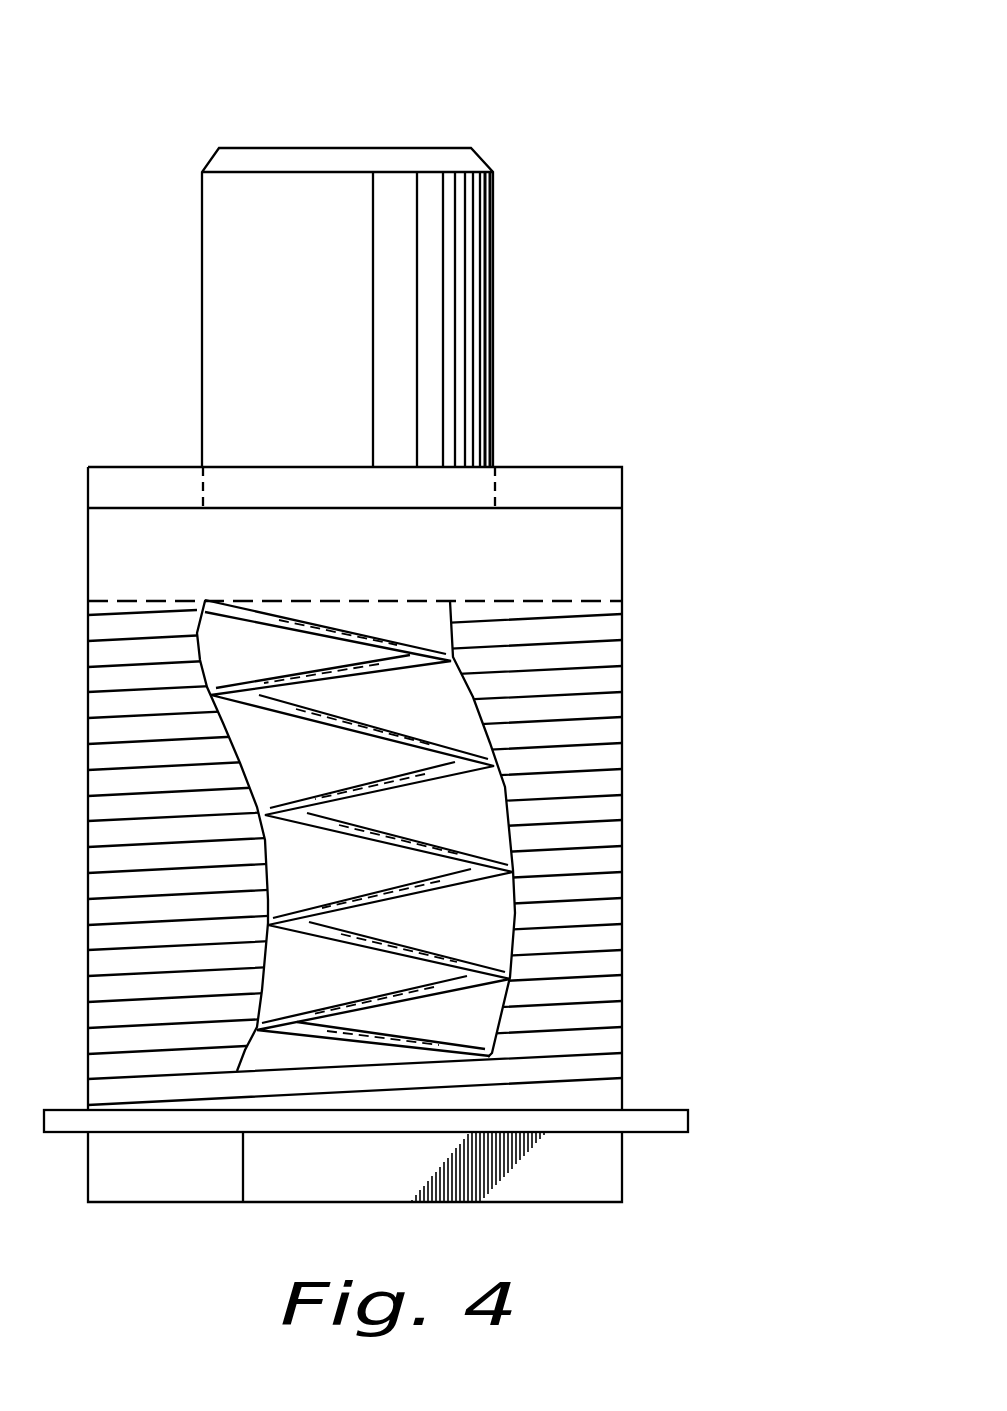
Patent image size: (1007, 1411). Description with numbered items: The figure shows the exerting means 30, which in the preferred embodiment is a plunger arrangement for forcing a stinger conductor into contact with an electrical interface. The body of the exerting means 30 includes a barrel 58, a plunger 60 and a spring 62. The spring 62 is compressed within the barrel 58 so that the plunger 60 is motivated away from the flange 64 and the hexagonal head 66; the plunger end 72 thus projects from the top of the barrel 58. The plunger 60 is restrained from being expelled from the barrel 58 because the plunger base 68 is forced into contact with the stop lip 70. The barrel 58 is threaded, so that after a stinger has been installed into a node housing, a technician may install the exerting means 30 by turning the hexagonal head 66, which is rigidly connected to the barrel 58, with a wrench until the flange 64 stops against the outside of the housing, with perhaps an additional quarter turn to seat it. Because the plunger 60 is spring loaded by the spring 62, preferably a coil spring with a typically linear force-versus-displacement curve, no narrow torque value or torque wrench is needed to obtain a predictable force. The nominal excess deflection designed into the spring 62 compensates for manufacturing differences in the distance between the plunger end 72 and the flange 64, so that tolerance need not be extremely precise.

The plunger end 72 is at (393, 147).
The plunger 60 is at (455, 313).
The exerting means 30 is at (745, 308).
The stop lip 70 is at (568, 489).
The plunger base 68 is at (585, 540).
The barrel 58 is at (597, 780).
The spring 62 is at (329, 720).
The flange 64 is at (677, 1120).
The hexagonal head 66 is at (608, 1173).